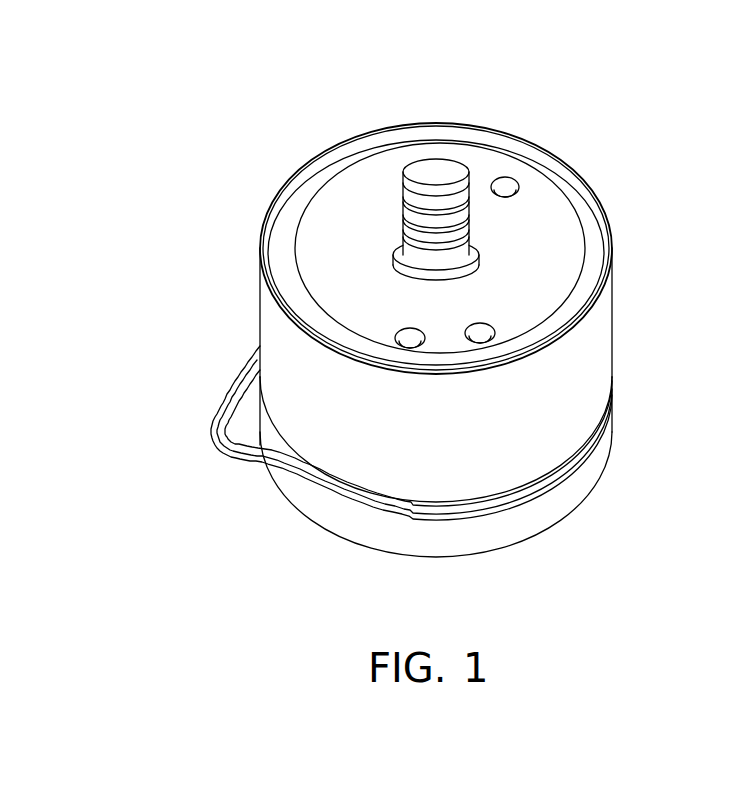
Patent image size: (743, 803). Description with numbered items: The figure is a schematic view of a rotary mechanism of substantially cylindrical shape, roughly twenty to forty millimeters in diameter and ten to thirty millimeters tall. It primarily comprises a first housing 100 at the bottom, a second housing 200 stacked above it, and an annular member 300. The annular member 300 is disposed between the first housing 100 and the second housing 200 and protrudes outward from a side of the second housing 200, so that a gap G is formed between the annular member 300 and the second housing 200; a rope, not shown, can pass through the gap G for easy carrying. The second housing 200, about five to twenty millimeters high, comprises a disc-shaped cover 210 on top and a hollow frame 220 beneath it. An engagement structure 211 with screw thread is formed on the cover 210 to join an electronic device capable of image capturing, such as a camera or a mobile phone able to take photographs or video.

The first housing 100 is at (616, 428).
The second housing 200 is at (616, 343).
The disc-shaped cover 210 is at (332, 207).
The engagement structure 211 is at (430, 168).
The hollow frame 220 is at (278, 342).
The annular member 300 is at (216, 435).
The gap G is at (248, 418).